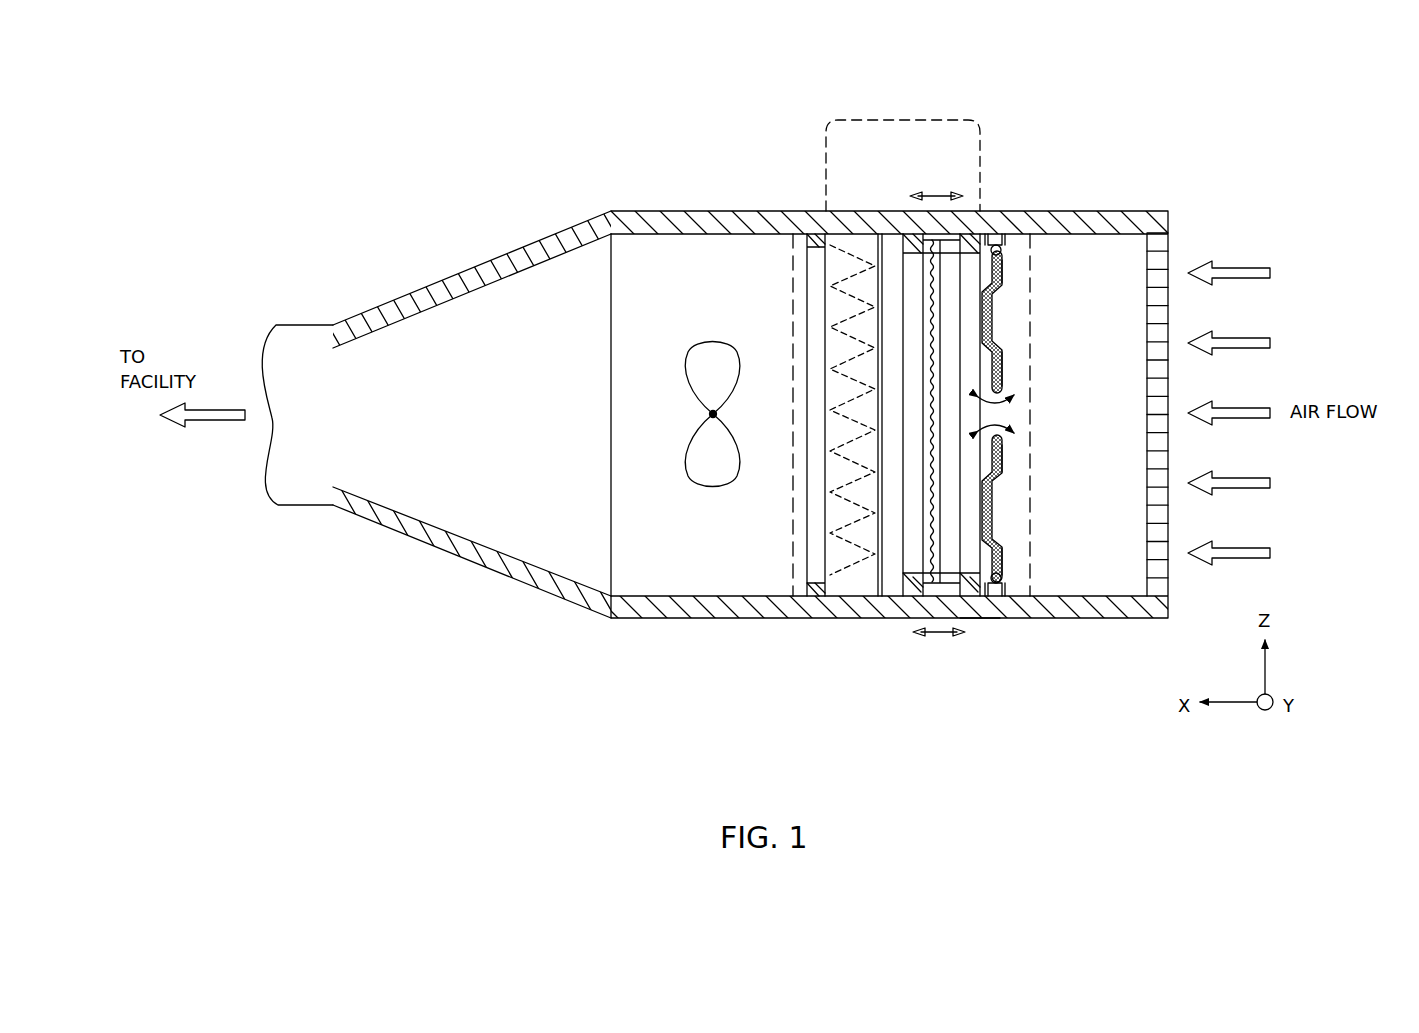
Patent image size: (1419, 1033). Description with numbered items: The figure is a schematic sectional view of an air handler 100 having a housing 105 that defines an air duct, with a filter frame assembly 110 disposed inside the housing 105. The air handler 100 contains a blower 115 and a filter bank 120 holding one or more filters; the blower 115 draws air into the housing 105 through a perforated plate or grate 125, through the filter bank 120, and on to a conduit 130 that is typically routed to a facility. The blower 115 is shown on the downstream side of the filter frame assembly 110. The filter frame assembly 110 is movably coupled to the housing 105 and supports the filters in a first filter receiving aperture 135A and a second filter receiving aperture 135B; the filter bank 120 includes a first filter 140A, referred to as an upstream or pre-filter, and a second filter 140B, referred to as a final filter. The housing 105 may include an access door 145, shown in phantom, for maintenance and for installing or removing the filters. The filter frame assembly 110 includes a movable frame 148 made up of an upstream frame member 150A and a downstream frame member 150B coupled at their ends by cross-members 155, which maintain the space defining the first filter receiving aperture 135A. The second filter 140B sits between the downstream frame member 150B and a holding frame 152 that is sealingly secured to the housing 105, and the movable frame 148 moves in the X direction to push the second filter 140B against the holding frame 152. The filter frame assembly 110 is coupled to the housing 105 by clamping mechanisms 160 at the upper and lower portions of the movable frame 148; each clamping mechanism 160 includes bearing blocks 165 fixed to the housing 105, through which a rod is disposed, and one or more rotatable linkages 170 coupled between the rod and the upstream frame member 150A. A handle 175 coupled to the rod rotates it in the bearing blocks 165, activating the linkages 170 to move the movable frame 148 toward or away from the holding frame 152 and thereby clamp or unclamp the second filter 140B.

The air handler 100 is at (746, 394).
The housing 105 is at (700, 624).
The filter frame assembly 110 is at (979, 624).
The blower 115 is at (710, 340).
The filter bank 120 is at (905, 118).
The perforated plate or grate 125 is at (1170, 248).
The conduit 130 is at (300, 325).
The first filter receiving aperture 135A is at (952, 236).
The second filter receiving aperture 135B is at (885, 236).
The first filter 140A is at (892, 598).
The second filter 140B is at (855, 598).
The access door 145 is at (1030, 393).
The movable frame 148 is at (989, 410).
The upstream frame member 150A is at (978, 355).
The downstream frame member 150B is at (973, 395).
The holding frame 152 is at (800, 495).
The cross-members 155 is at (936, 236).
The clamping mechanism 160 is at (1006, 250).
The bearing blocks 165 is at (1003, 240).
The rotatable linkage 170 is at (997, 234).
The handle 175 is at (1003, 300).